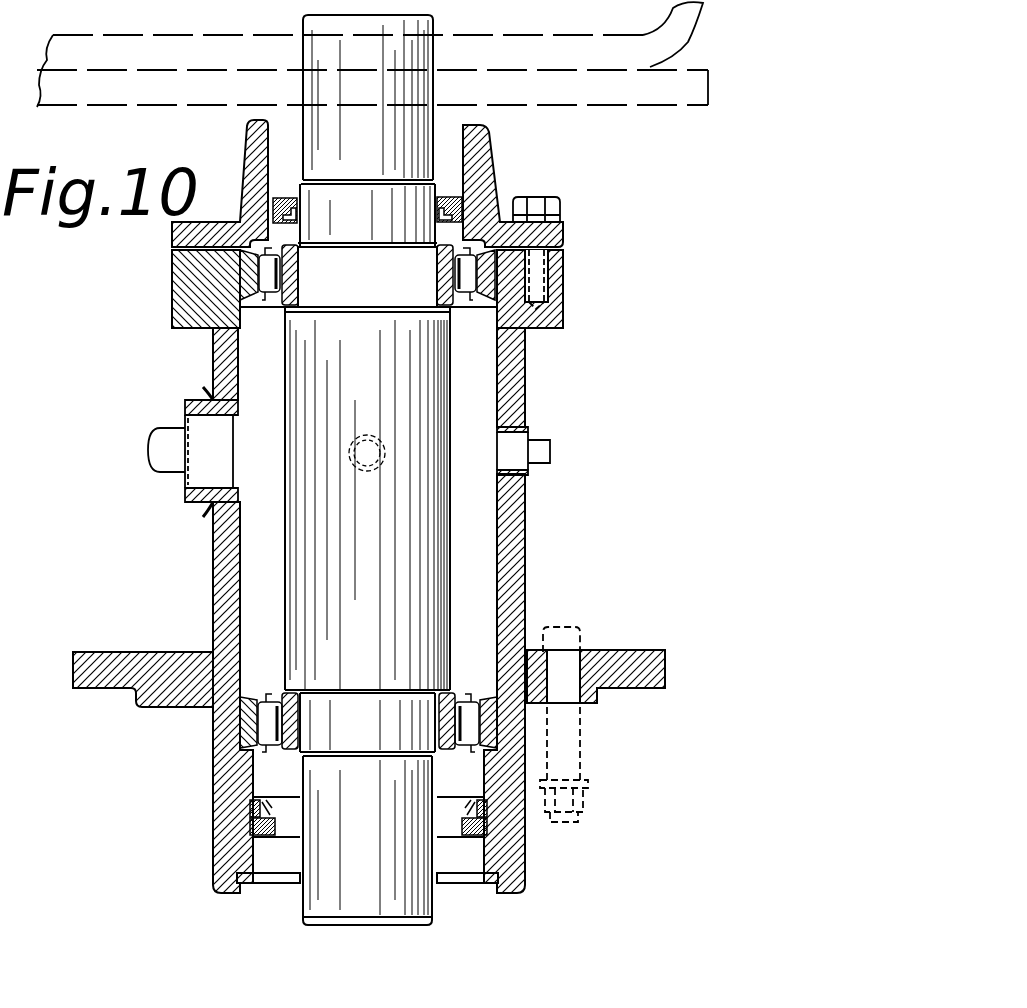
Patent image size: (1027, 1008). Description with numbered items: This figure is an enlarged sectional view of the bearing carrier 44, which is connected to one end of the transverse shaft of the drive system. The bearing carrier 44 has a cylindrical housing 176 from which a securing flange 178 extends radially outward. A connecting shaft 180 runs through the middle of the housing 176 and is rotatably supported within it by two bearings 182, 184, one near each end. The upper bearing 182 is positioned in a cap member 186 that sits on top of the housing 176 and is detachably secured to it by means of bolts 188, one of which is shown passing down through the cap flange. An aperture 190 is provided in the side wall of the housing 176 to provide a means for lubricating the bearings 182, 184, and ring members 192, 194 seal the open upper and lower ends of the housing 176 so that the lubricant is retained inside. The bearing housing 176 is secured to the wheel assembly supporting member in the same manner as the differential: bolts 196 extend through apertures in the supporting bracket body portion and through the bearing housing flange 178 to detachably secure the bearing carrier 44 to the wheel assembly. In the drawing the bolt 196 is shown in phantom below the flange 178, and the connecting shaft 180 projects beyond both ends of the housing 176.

The bearing carrier 44 is at (122, 500).
The cylindrical housing 176 is at (213, 583).
The securing flange 178 is at (107, 652).
The connecting shaft 180 is at (378, 335).
The bearing 182 is at (245, 220).
The bearing 184 is at (272, 705).
The cap member 186 is at (245, 157).
The bolts 188 is at (540, 197).
The aperture 190 is at (187, 423).
The ring member 192 is at (285, 200).
The ring member 194 is at (282, 833).
The bolts 196 is at (580, 743).